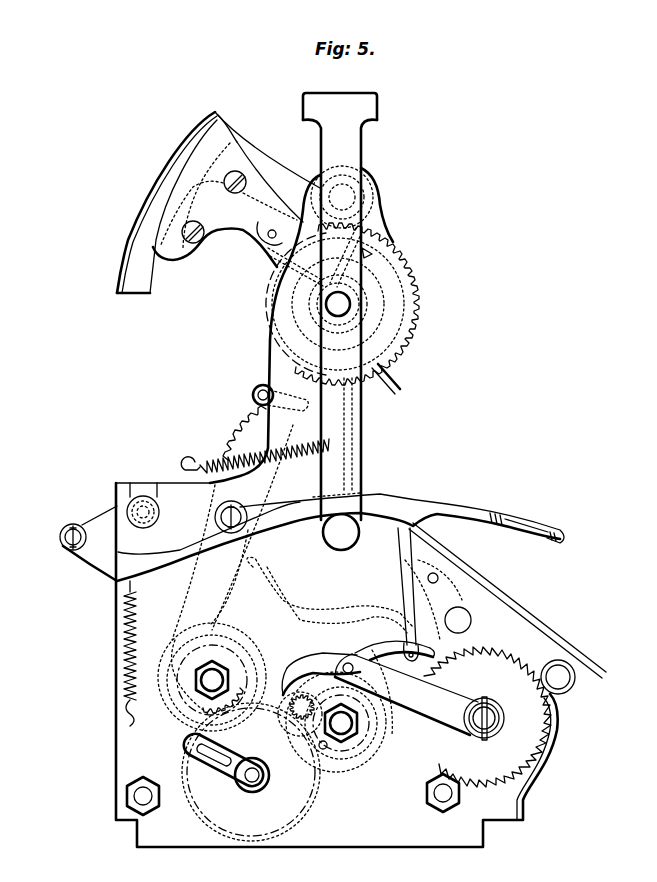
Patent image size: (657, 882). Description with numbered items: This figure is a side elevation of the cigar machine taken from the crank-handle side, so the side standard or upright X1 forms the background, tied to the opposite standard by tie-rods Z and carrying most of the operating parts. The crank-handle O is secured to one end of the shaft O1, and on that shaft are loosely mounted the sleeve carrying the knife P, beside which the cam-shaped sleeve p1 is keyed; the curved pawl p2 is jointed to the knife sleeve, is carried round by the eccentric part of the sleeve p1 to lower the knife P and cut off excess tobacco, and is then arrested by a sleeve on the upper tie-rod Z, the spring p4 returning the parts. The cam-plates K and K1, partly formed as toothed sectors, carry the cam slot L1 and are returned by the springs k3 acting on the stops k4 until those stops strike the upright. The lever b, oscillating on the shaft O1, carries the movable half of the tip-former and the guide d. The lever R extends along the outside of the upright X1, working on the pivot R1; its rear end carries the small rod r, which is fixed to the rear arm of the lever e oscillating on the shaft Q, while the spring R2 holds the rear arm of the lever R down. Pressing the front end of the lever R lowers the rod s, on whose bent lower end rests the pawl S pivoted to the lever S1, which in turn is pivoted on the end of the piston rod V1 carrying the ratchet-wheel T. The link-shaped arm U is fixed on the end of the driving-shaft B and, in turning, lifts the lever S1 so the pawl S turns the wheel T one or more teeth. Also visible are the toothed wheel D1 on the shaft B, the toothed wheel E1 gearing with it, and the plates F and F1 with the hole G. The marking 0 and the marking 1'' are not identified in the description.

The knife P is at (218, 202).
The arm 0 is at (340, 306).
The tie-rod Z is at (293, 490).
The shaft O1 is at (342, 304).
The spring p4 is at (304, 286).
The cam-shaped sleeve p1 is at (351, 257).
The curved pawl p2 is at (386, 391).
The lever b is at (261, 386).
The guide d is at (256, 398).
The cam-plate K1 is at (244, 433).
The spring k3 is at (195, 458).
The cam-plate K is at (264, 456).
The stop k4 is at (343, 442).
The link 1'' is at (336, 487).
The shaft Q is at (143, 505).
The pivot R1 is at (238, 508).
The crank-handle O is at (341, 532).
The rod r is at (62, 539).
The lever e is at (99, 518).
The lever R is at (102, 557).
The spring R2 is at (124, 640).
The rod s is at (402, 570).
The cam slot L1 is at (304, 610).
The pawl S is at (352, 650).
The lever S1 is at (406, 694).
The piston rod V1 is at (490, 714).
The ratchet-wheel T is at (487, 717).
The toothed wheel E1 is at (217, 652).
The plate F1 is at (173, 712).
The plate F is at (386, 701).
The hole G is at (296, 714).
The toothed wheel D1 is at (251, 772).
The link-shaped arm U is at (223, 760).
The driving-shaft B is at (256, 772).
The upright X1 is at (345, 665).